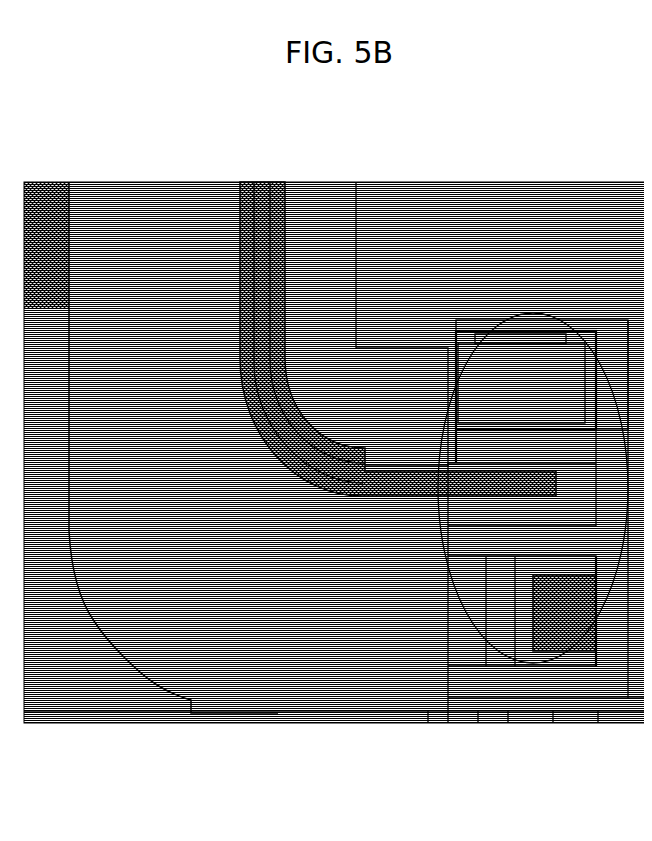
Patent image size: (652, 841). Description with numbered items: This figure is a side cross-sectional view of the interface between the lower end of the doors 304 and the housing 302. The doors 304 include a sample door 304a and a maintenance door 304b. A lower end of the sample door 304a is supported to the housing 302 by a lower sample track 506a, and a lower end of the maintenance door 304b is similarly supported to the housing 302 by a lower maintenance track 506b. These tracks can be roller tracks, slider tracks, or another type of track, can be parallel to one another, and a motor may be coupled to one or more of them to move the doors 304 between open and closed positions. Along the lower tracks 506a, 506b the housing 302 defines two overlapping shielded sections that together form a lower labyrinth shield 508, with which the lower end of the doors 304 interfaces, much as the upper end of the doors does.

The housing 302 is at (485, 714).
The doors 304 is at (273, 627).
The sample door 304a is at (383, 488).
The maintenance door 304b is at (356, 597).
The lower sample track 506a is at (440, 456).
The lower maintenance track 506b is at (492, 530).
The lower labyrinth shield 508 is at (450, 344).